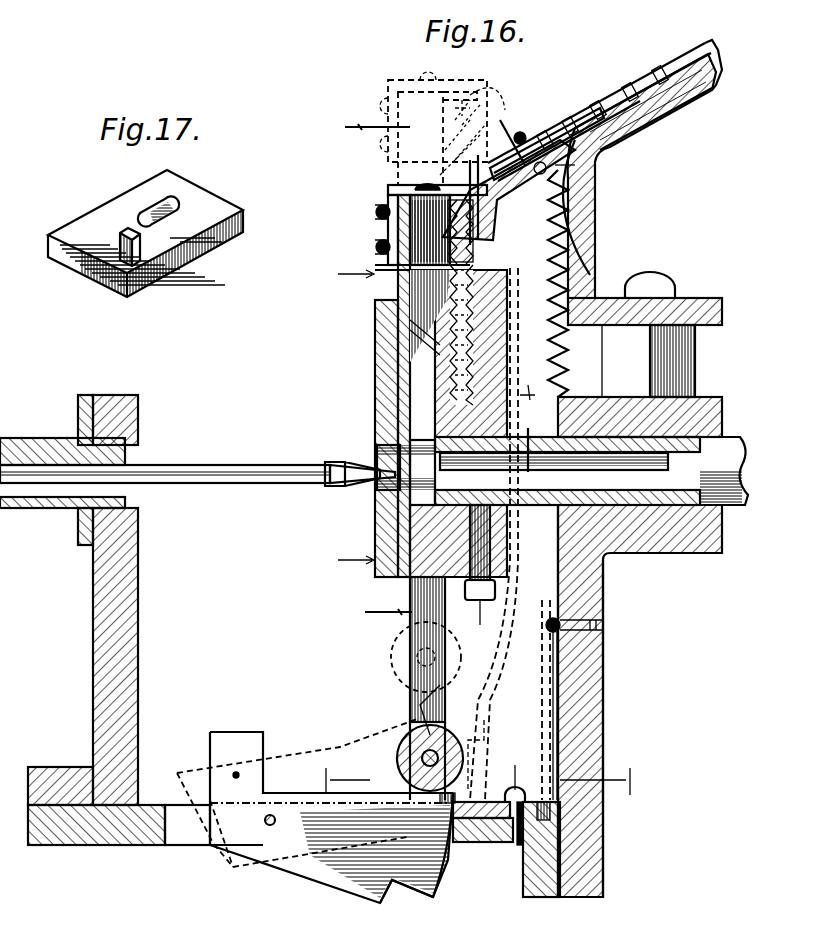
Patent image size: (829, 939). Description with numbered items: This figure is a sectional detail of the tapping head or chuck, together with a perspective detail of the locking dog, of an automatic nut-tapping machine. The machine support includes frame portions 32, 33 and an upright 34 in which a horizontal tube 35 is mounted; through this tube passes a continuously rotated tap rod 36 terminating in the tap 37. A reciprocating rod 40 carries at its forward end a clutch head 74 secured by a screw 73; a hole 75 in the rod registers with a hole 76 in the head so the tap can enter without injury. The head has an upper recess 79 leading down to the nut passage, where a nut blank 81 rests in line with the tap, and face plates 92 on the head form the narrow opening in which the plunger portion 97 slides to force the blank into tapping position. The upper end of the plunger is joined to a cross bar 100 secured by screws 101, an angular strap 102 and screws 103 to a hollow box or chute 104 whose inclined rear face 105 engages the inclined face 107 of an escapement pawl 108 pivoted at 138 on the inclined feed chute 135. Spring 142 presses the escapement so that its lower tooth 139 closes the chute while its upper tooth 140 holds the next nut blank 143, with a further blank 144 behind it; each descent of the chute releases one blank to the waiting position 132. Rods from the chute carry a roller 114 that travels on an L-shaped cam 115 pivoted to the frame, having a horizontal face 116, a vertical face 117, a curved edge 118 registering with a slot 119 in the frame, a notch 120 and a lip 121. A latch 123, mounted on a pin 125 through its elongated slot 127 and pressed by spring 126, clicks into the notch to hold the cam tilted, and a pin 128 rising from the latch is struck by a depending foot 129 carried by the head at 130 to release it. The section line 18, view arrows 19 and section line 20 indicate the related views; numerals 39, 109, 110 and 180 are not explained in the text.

In FIG. 16, the section line 18 is at (478, 781).
In FIG. 16, the view arrows 19 is at (355, 418).
In FIG. 16, the section line 20 is at (378, 368).
In FIG. 16, the frame portion 32 is at (150, 845).
In FIG. 16, the frame part 33 is at (598, 682).
In FIG. 16, the upright 34 is at (128, 622).
In FIG. 16, the horizontal tube 35 is at (40, 440).
In FIG. 16, the tap rod 36 is at (205, 466).
In FIG. 16, the tap 37 is at (345, 462).
In FIG. 16, the frame block 39 is at (690, 552).
In FIG. 16, the rod 40 is at (735, 442).
In FIG. 16, the screw 73 is at (479, 576).
In FIG. 16, the clutch head 74 is at (505, 345).
In FIG. 16, the hole 75 is at (515, 392).
In FIG. 16, the hole 76 is at (567, 471).
In FIG. 16, the recess 79 is at (420, 295).
In FIG. 16, the nut blank 81 is at (378, 448).
In FIG. 16, the face plates 92 is at (385, 523).
In FIG. 16, the plunger portion 97 is at (385, 347).
In FIG. 16, the cross bar 100 is at (406, 278).
In FIG. 16, the screws 101 is at (420, 242).
In FIG. 16, the angular strap 102 is at (405, 82).
In FIG. 16, the screws 103 is at (425, 187).
In FIG. 16, the hollow box or chute 104 is at (490, 74).
In FIG. 16, the rear face 105 is at (514, 140).
In FIG. 16, the inclined face 107 is at (485, 222).
In FIG. 16, the escapement pawl 108 is at (552, 235).
In FIG. 16, the screw 109 is at (400, 259).
In FIG. 16, the lever phantom 110 is at (487, 130).
In FIG. 16, the roller 114 is at (405, 632).
In FIG. 16, the cam 115 is at (330, 760).
In FIG. 16, the horizontal face 116 is at (268, 823).
In FIG. 16, the vertical face 117 is at (225, 745).
In FIG. 16, the curved edge 118 is at (455, 845).
In FIG. 16, the slot 119 is at (177, 822).
In FIG. 16, the notch 120 is at (410, 890).
In FIG. 16, the lip or lug 121 is at (440, 700).
In FIG. 17, the latch 123 is at (190, 197).
In FIG. 16, the latch 123 is at (478, 838).
In FIG. 16, the pin or screw 125 is at (521, 772).
In FIG. 16, the spring 126 is at (560, 728).
In FIG. 17, the elongated slot 127 is at (153, 210).
In FIG. 16, the elongated slot 127 is at (520, 858).
In FIG. 17, the pin or lug 128 is at (141, 244).
In FIG. 16, the pin or lug 128 is at (492, 726).
In FIG. 16, the depending foot 129 is at (485, 692).
In FIG. 16, the foot mounting 130 is at (520, 550).
In FIG. 16, the nut blank 132 is at (408, 327).
In FIG. 16, the feed chute 135 is at (612, 80).
In FIG. 16, the pivot 138 is at (547, 168).
In FIG. 16, the lower tooth 139 is at (520, 140).
In FIG. 16, the upper tooth 140 is at (552, 128).
In FIG. 16, the spring 142 is at (596, 242).
In FIG. 16, the nut blank 143 is at (612, 130).
In FIG. 16, the nut blank 144 is at (640, 105).
In FIG. 16, the pin 180 is at (528, 392).